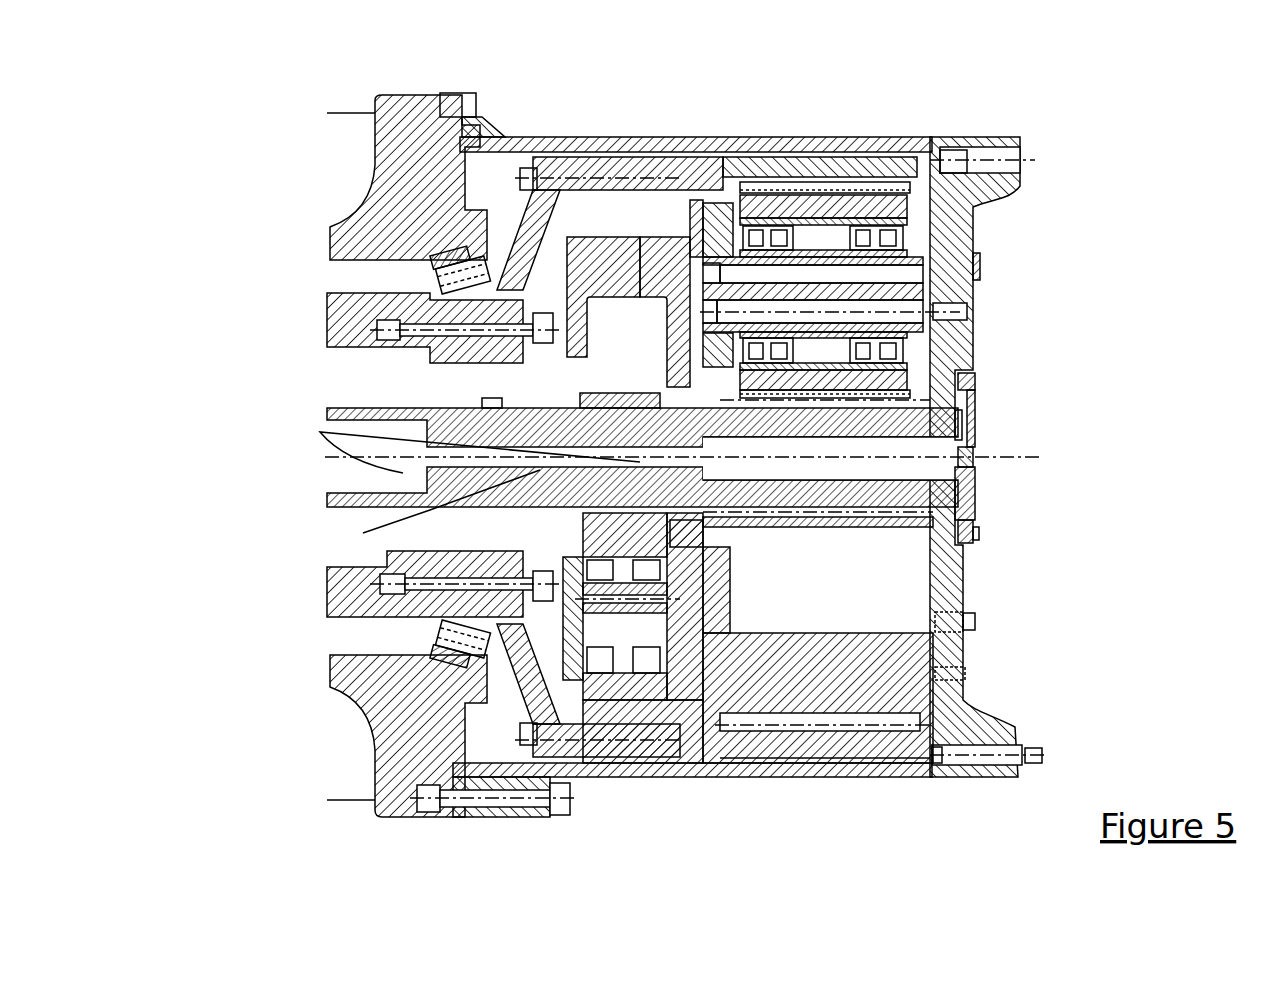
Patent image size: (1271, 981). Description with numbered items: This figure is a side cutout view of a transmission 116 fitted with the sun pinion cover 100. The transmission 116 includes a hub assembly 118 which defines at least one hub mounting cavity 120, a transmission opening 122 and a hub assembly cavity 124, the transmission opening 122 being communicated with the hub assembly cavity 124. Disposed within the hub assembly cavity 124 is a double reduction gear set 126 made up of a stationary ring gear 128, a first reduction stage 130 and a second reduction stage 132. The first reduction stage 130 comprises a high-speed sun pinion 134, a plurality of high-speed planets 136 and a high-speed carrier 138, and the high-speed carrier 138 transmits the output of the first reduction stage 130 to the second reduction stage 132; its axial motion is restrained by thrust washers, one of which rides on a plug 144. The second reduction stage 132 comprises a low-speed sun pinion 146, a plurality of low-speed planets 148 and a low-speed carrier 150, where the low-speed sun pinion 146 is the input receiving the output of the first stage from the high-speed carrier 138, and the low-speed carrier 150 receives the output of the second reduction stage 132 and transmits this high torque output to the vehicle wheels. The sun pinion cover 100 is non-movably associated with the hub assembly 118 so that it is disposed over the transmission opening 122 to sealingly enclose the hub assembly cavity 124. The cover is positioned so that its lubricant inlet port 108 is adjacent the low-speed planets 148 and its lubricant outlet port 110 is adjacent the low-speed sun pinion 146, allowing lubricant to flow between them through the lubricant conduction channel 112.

The sun pinion cover 100 is at (1034, 520).
The lubricant inlet port 108 is at (1026, 408).
The lubricant outlet port 110 is at (1048, 453).
The lubricant conduction channel 112 is at (1033, 420).
The transmission 116 is at (775, 452).
The hub assembly 118 is at (421, 456).
The hub mounting cavity 120 is at (1019, 358).
The transmission opening 122 is at (1025, 491).
The hub assembly cavity 124 is at (686, 434).
The double reduction gear set 126 is at (679, 222).
The stationary ring gear 128 is at (610, 406).
The first reduction stage 130 is at (604, 393).
The second reduction stage 132 is at (1035, 457).
The high-speed sun pinion 134 is at (605, 518).
The high-speed planets 136 is at (633, 706).
The high-speed carrier 138 is at (606, 220).
The plug 144 is at (570, 482).
The low-speed sun pinion 146 is at (975, 547).
The low-speed planets 148 is at (1054, 289).
The low-speed carrier 150 is at (822, 769).